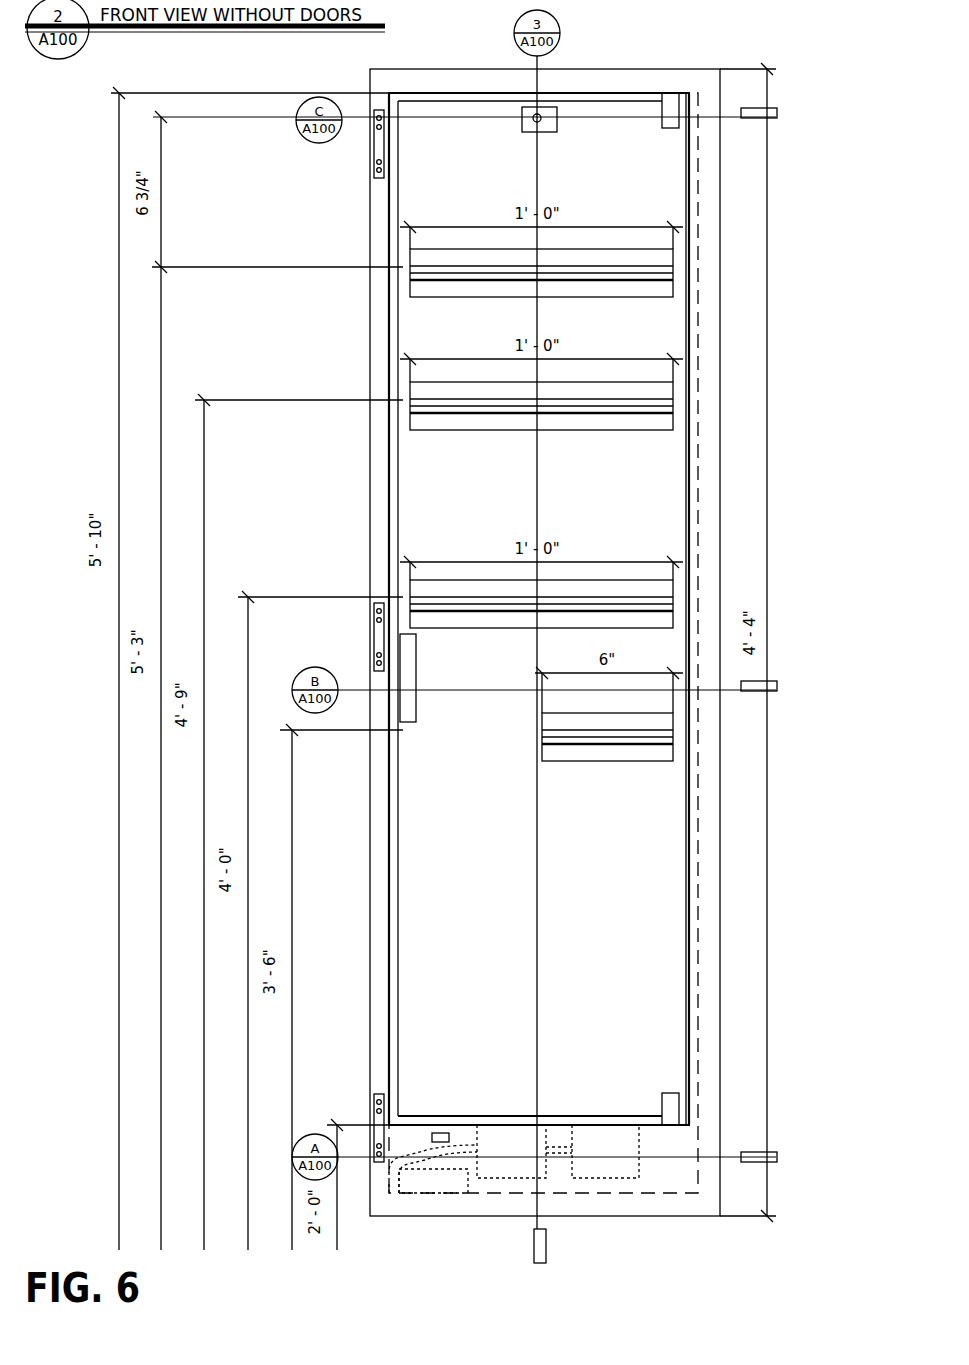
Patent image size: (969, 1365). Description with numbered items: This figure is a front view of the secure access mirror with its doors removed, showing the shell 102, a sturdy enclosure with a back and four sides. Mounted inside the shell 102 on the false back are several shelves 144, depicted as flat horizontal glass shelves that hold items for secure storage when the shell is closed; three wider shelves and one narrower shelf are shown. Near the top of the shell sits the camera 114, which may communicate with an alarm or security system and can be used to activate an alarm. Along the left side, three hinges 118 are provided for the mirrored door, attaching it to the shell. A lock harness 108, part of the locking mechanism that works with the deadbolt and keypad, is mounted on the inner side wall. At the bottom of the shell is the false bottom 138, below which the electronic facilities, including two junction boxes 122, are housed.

The shell 102 is at (689, 947).
The lock harness 108 is at (406, 719).
The camera 114 is at (558, 110).
The hinges 118 is at (373, 135).
The junction boxes 122 is at (599, 1179).
The false bottom 138 is at (613, 1117).
The shelves 144 is at (674, 288).